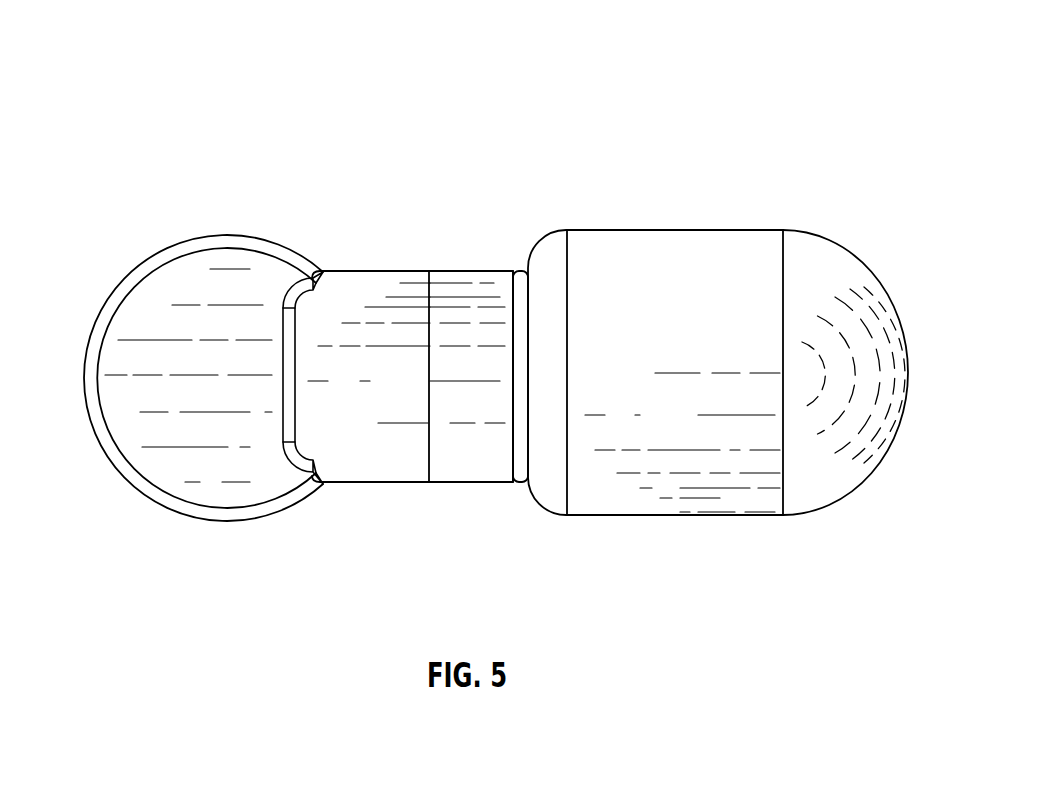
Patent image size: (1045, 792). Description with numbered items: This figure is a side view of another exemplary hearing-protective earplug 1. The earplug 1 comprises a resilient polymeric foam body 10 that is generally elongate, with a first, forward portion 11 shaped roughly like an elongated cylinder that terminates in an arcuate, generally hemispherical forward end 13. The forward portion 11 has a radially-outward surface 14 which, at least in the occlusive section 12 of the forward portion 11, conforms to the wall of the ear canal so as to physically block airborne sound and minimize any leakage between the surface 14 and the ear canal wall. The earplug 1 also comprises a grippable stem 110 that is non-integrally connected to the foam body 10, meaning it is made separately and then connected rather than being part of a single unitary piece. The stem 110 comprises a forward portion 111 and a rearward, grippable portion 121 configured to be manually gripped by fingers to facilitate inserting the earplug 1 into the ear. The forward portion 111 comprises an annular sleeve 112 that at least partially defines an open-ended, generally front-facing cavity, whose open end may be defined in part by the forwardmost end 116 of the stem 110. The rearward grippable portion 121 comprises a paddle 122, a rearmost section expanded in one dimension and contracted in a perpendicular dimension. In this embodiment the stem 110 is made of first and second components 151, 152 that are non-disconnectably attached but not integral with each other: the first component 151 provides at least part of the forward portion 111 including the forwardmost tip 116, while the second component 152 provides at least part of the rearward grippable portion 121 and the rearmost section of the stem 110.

The hearing-protective earplug 1 is at (268, 88).
The resilient polymeric foam body 10 is at (855, 146).
The first, forward portion 11 is at (770, 238).
The occlusive section 12 is at (757, 510).
The forward end 13 is at (913, 428).
The radially-outward surface 14 is at (665, 229).
The grippable stem 110 is at (138, 200).
The forward portion of stem 111 is at (380, 270).
The annular sleeve 112 is at (418, 483).
The forwardmost end 116 is at (521, 272).
The rearward, grippable portion 121 is at (140, 545).
The paddle 122 is at (98, 312).
The first component 151 is at (487, 271).
The second component 152 is at (416, 271).